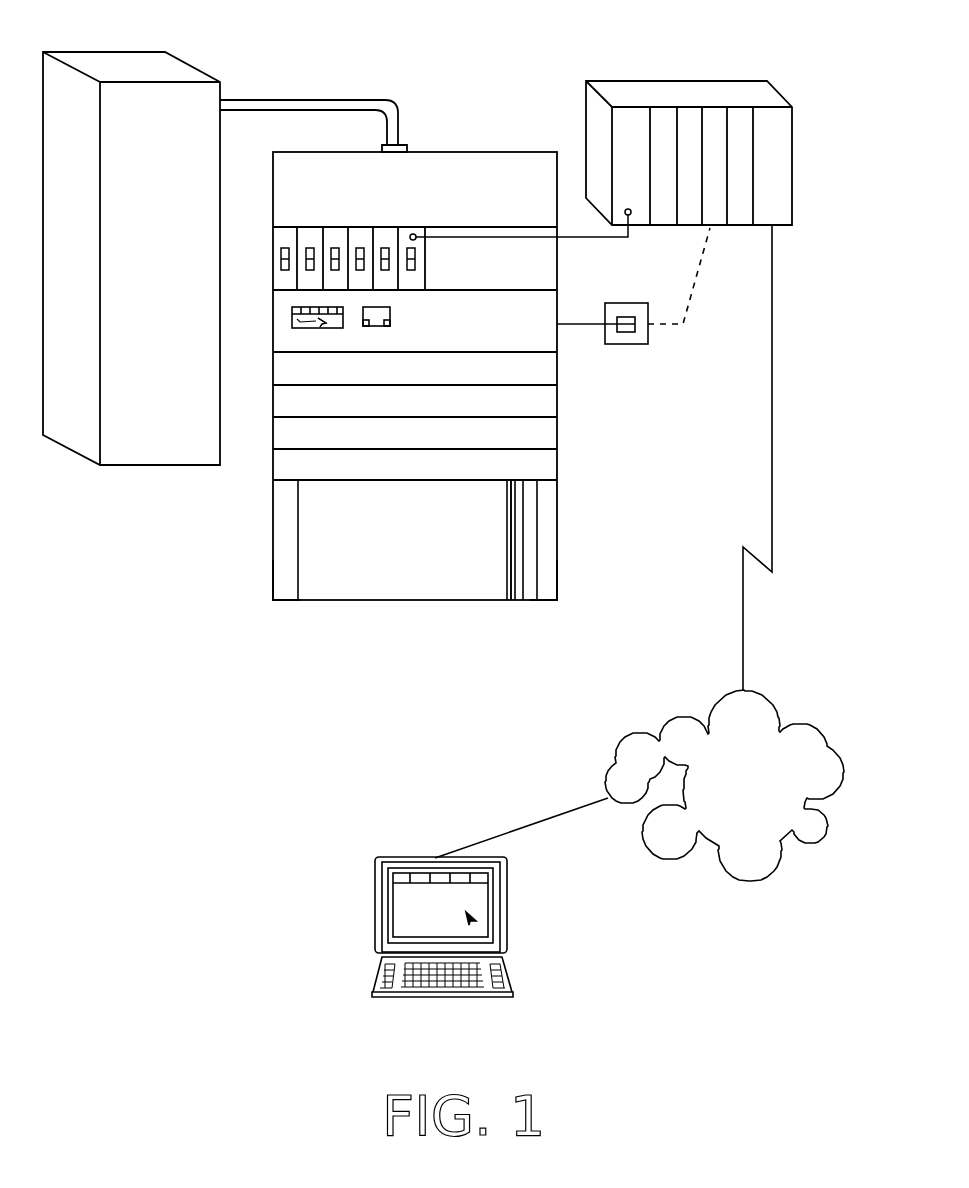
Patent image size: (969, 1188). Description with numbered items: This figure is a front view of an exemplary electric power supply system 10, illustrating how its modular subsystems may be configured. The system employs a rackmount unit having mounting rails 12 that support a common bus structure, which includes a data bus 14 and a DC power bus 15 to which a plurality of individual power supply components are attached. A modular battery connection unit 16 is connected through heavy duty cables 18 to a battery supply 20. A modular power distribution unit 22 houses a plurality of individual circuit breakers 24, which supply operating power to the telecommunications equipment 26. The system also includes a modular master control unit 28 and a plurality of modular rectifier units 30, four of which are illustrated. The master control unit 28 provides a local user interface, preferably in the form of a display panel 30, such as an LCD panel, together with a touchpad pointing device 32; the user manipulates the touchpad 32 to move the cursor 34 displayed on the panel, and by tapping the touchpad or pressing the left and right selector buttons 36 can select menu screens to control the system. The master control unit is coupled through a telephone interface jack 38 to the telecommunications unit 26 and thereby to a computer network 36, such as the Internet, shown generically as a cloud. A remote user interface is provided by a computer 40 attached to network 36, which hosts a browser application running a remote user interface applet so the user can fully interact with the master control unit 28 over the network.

The power supply system 10 is at (226, 584).
The mounting rails 12 is at (283, 601).
The data bus 14 is at (527, 522).
The DC power bus 15 is at (510, 567).
The modular battery connection unit 16 is at (463, 158).
The heavy duty cables 18 is at (324, 100).
The battery supply 20 is at (128, 72).
The modular power distribution unit 22 is at (540, 253).
The circuit breakers 24 is at (392, 228).
The telecommunications equipment 26 is at (635, 92).
The modular master control unit 28 is at (285, 333).
The modular rectifier units 30 is at (290, 312).
The touchpad pointing device 32 is at (390, 310).
The cursor 34 is at (325, 322).
The network 36 is at (833, 745).
The telephone interface jack 38 is at (637, 338).
The computer 40 is at (386, 858).